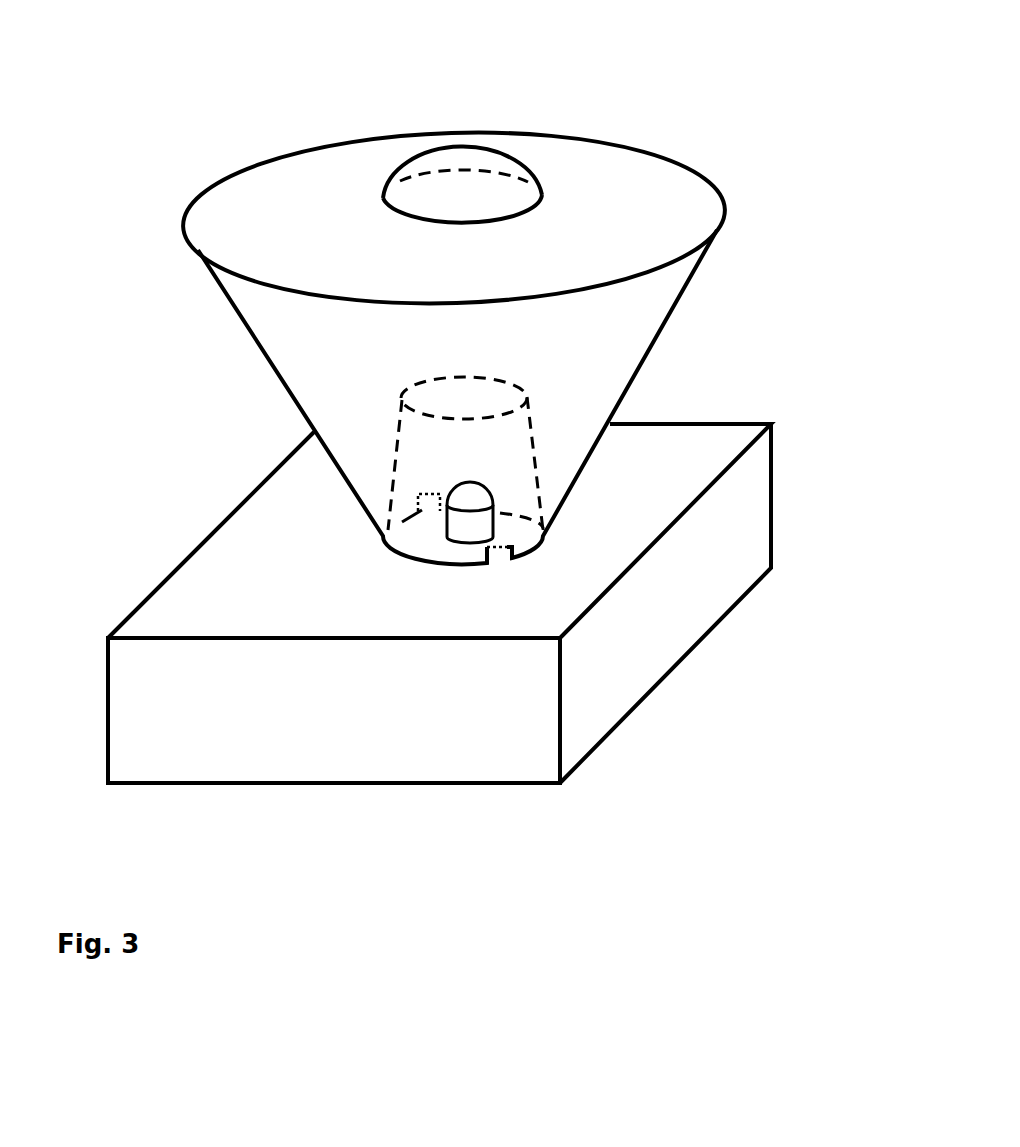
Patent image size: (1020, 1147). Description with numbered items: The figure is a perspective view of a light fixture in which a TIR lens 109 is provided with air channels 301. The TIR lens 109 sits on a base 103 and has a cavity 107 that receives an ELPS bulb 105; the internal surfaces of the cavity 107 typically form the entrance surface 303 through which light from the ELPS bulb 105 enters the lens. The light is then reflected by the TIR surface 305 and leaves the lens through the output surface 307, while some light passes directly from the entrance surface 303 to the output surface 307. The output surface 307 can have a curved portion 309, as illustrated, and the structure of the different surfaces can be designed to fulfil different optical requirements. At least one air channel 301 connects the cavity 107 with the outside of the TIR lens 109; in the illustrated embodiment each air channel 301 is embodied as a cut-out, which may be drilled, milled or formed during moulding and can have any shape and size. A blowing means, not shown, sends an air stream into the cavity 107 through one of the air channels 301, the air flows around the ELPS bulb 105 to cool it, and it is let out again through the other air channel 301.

The substrate 103 is at (525, 770).
The ELPS bulb 105 is at (483, 512).
The cavity 107 is at (437, 453).
The TIR lens 109 is at (720, 203).
The air channel 301 is at (500, 557).
The entrance surface 303 is at (537, 467).
The TIR surface 305 is at (658, 340).
The output surface 307 is at (258, 218).
The curved portion 309 is at (463, 170).